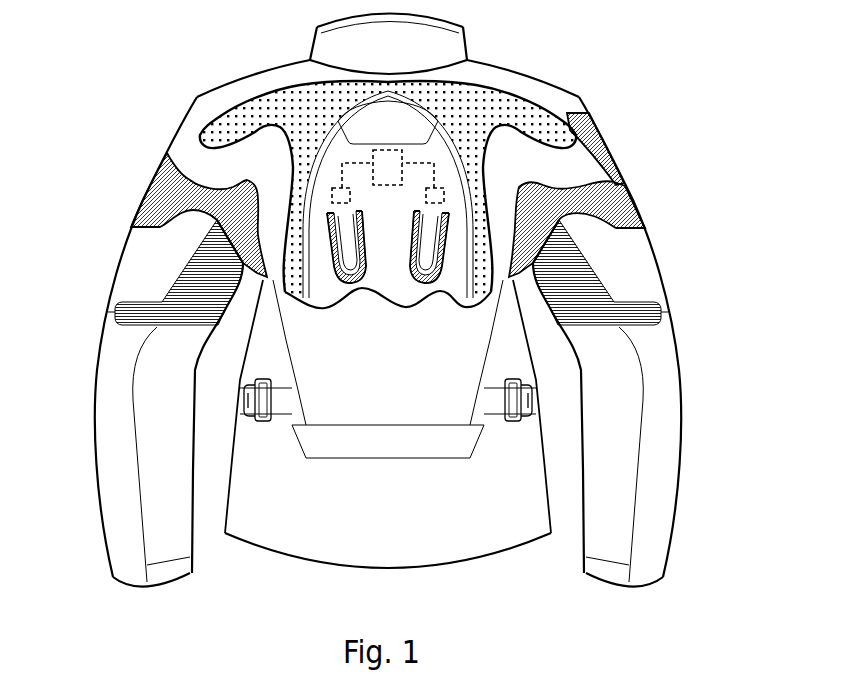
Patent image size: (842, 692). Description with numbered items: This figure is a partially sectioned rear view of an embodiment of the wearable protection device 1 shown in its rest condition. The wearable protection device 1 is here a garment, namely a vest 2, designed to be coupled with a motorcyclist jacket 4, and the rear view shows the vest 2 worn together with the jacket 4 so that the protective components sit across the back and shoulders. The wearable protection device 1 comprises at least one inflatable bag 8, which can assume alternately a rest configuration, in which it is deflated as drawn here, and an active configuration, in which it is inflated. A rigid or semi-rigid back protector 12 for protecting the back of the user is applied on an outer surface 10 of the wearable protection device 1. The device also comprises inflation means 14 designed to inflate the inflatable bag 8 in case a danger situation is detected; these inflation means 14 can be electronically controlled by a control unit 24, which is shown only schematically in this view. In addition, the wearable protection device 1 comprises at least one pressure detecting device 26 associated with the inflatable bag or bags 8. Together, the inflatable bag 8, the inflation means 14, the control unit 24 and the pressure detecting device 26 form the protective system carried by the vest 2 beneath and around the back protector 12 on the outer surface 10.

The wearable protection device 1 is at (785, 140).
The vest 2 is at (168, 183).
The motorcyclist jacket 4 is at (90, 494).
The inflatable bag 8 is at (567, 160).
The outer surface 10 is at (584, 180).
The back protector 12 is at (437, 110).
The inflation means 14 is at (333, 260).
The control unit 24 is at (387, 150).
The pressure detecting device 26 is at (325, 192).